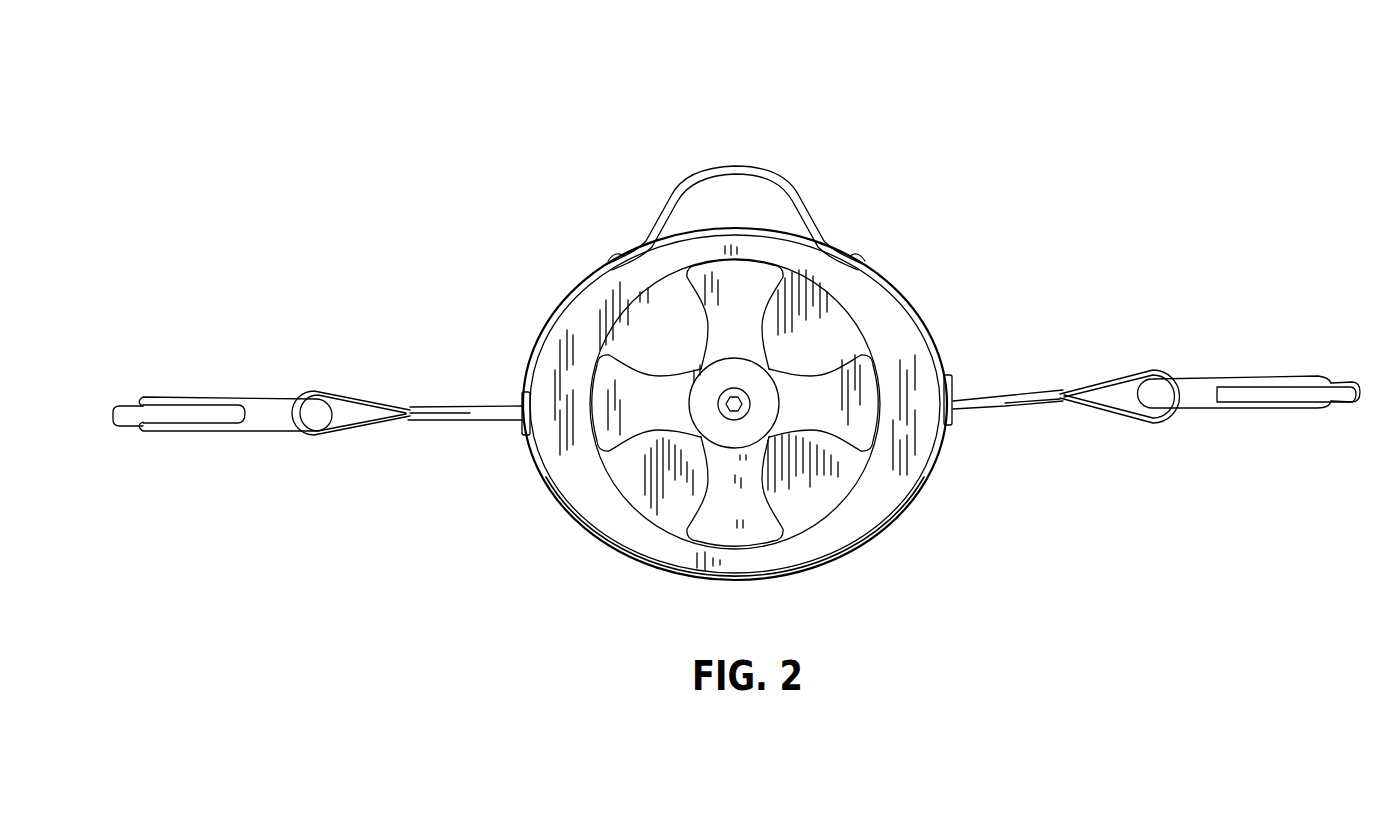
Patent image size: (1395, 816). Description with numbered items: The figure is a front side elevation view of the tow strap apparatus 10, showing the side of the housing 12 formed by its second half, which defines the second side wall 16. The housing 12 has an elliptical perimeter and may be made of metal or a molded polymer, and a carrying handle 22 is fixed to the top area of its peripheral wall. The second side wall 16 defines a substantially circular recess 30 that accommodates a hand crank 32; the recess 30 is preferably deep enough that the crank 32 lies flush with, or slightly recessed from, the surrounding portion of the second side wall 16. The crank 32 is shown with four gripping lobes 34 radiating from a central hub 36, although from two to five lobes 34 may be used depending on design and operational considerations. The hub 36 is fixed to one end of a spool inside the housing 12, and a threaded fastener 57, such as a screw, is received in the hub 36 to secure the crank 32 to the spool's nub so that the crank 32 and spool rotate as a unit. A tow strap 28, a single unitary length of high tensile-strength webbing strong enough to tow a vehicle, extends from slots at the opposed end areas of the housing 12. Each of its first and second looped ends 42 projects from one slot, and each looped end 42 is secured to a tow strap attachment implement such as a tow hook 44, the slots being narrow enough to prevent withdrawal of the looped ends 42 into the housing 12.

The tow strap apparatus 10 is at (736, 329).
The housing 12 is at (908, 297).
The second side wall 16 is at (880, 492).
The carrying handle 22 is at (773, 166).
The tow strap 28 is at (480, 420).
The circular recess 30 is at (640, 502).
The hand crank 32 is at (735, 431).
The gripping lobes 34 is at (720, 321).
The central hub 36 is at (695, 375).
The looped ends 42 is at (313, 437).
The tow hook 44 is at (163, 400).
The threaded fastener 57 is at (742, 388).